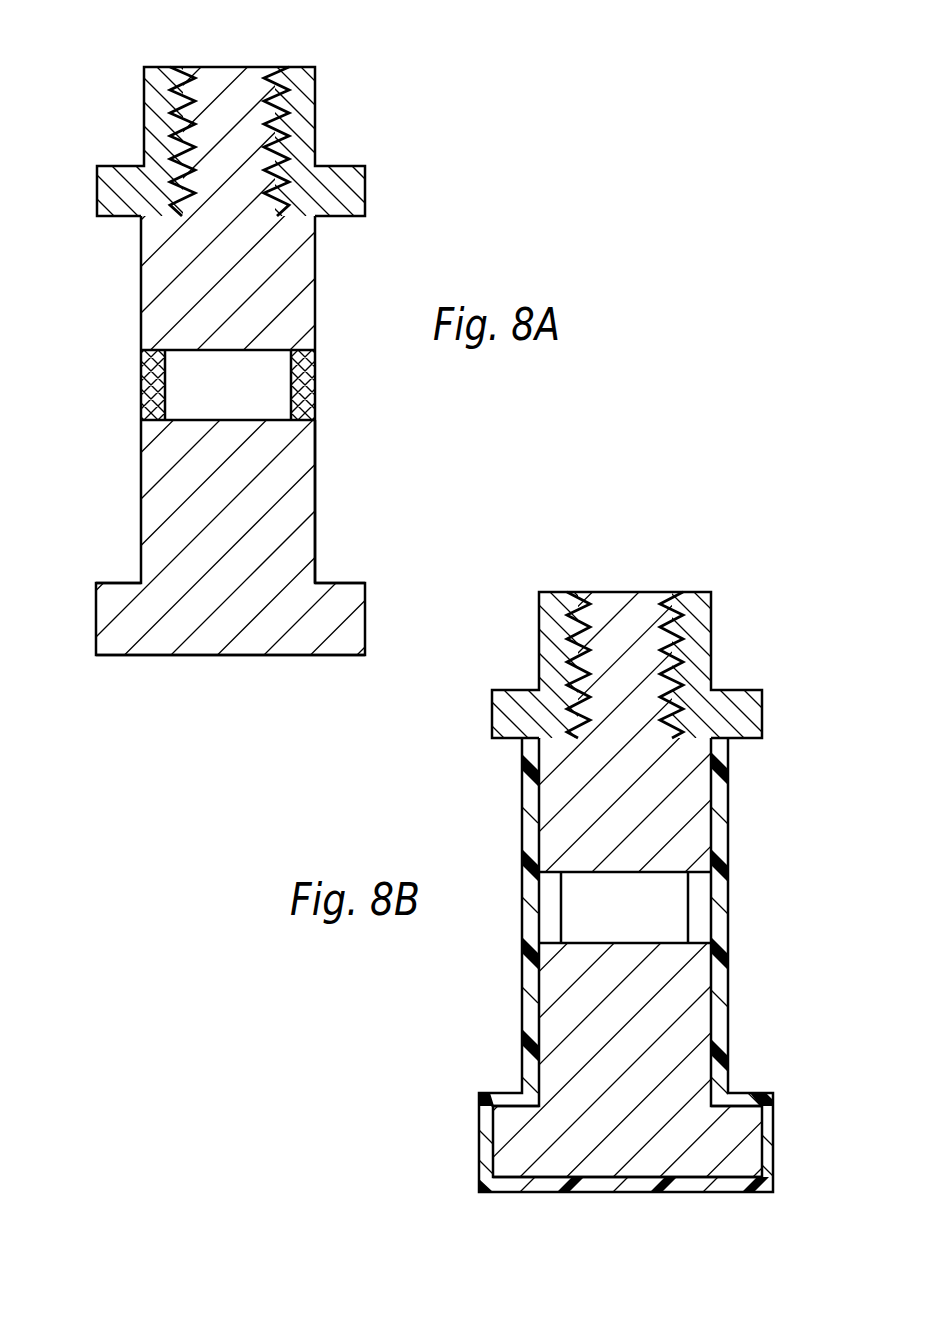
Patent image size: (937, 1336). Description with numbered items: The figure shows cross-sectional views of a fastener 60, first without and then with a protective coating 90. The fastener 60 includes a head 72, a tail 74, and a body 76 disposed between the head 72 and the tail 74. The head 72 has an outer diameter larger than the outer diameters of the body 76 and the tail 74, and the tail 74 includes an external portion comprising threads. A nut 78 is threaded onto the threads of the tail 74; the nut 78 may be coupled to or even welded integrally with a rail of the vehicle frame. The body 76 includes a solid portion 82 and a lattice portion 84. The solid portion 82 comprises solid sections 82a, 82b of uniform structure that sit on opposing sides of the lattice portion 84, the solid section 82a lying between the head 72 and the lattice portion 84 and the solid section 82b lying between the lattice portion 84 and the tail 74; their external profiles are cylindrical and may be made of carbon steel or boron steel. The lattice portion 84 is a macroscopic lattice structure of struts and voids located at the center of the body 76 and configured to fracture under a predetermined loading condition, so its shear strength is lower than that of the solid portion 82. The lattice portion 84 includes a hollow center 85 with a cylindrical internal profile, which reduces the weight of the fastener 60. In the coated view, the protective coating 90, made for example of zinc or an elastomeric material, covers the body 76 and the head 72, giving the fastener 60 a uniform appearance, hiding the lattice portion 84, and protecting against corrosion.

In FIG. 8A, the fastener 60 is at (353, 484).
In FIG. 8B, the fastener 60 is at (758, 772).
In FIG. 8A, the head 72 is at (177, 637).
In FIG. 8B, the head 72 is at (537, 1148).
In FIG. 8A, the tail 74 is at (235, 128).
In FIG. 8B, the tail 74 is at (628, 715).
In FIG. 8A, the body 76 is at (345, 432).
In FIG. 8A, the nut 78 is at (315, 103).
In FIG. 8B, the nut 78 is at (528, 710).
In FIG. 8A, the solid portion 82 is at (244, 400).
In FIG. 8B, the solid portion 82 is at (601, 888).
In FIG. 8A, the solid section 82a is at (202, 505).
In FIG. 8B, the solid section 82a is at (573, 1048).
In FIG. 8A, the solid section 82b is at (203, 296).
In FIG. 8B, the solid section 82b is at (597, 802).
In FIG. 8A, the lattice portion 84 is at (150, 385).
In FIG. 8B, the lattice portion 84 is at (700, 915).
In FIG. 8A, the hollow center 85 is at (230, 370).
In FIG. 8B, the hollow center 85 is at (655, 918).
In FIG. 8B, the protective coating 90 is at (772, 1116).